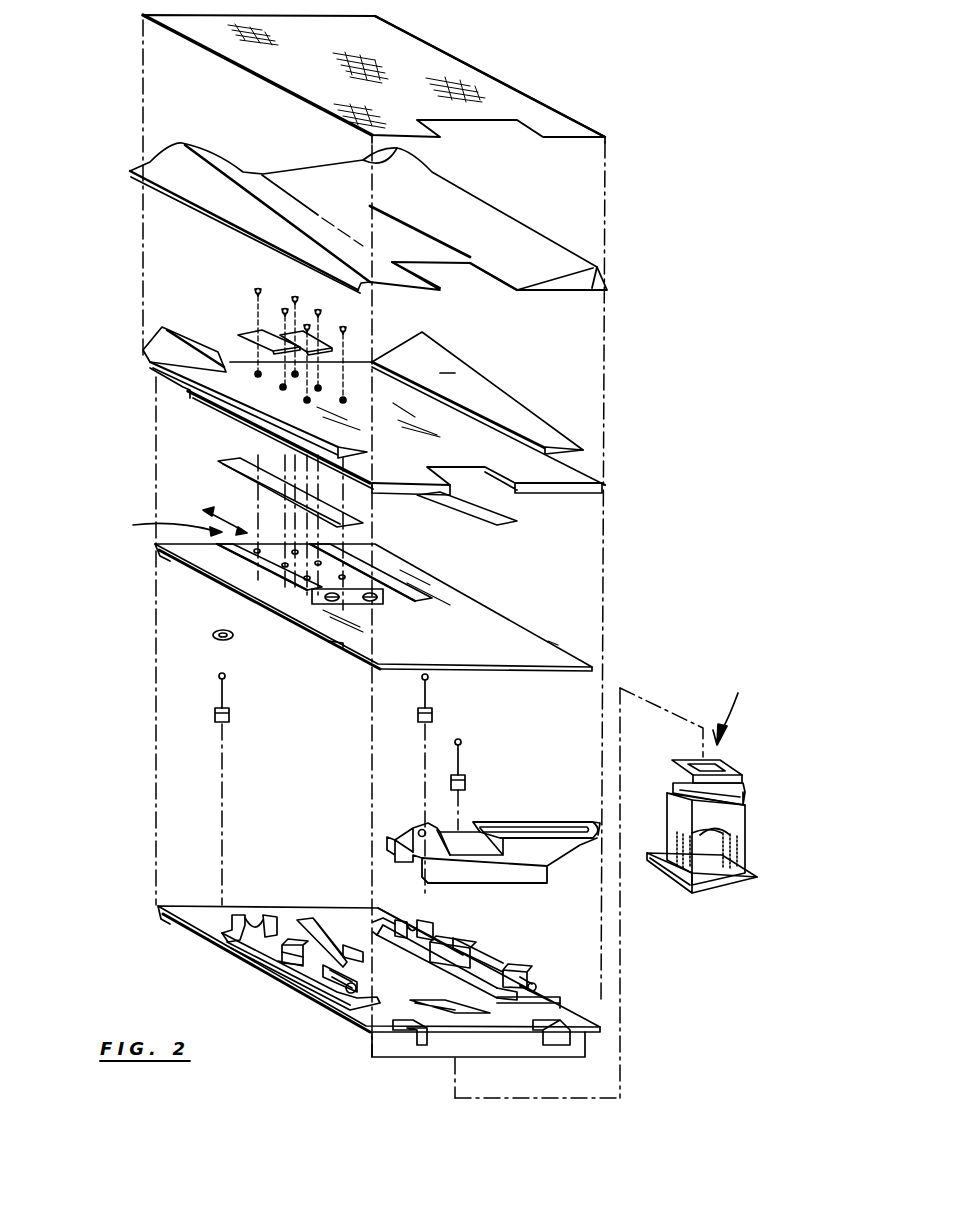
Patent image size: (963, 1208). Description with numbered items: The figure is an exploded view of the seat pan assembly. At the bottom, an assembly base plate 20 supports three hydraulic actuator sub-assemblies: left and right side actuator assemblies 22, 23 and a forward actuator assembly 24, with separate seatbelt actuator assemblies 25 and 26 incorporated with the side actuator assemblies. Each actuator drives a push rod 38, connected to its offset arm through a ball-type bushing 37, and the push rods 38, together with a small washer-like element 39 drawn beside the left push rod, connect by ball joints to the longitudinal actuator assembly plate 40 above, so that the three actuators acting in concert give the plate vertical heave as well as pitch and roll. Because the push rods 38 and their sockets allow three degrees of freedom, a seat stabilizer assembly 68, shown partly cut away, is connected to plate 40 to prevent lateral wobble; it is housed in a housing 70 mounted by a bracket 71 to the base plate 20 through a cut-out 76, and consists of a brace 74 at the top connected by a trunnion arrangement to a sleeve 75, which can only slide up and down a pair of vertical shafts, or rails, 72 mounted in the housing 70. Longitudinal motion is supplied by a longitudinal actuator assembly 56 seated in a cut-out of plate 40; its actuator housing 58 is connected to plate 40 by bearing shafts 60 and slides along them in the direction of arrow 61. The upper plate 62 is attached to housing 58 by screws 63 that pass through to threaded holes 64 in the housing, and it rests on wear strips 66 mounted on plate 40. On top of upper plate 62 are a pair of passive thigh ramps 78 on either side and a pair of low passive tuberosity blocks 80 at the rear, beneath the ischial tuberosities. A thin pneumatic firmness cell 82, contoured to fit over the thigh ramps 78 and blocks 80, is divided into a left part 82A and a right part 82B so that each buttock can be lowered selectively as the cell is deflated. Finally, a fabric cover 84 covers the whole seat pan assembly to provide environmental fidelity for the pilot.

The assembly base plate 20 is at (352, 963).
The left side actuator assembly 22 is at (407, 930).
The right side actuator assembly 23 is at (320, 935).
The forward actuator assembly 24 is at (510, 827).
The seatbelt actuator assembly 25 is at (497, 960).
The seatbelt actuator assembly 26 is at (303, 962).
The ball-type bushing 37 is at (230, 718).
The push rod 38 is at (222, 707).
The washer 39 is at (220, 672).
The longitudinal actuator assembly plate 40 is at (373, 607).
The longitudinal actuator assembly 56 is at (163, 525).
The actuator housing 58 is at (280, 567).
The bearing shafts 60 is at (372, 592).
The arrow 61 is at (233, 513).
The upper plate 62 is at (371, 402).
The screws 63 is at (293, 297).
The threaded holes 64 is at (345, 551).
The wear strips 66 is at (242, 460).
The seat stabilizer assembly 68 is at (731, 709).
The housing 70 is at (722, 830).
The bracket 71 is at (757, 867).
The vertical shafts 72 is at (722, 857).
The brace 74 is at (727, 762).
The sleeve 75 is at (742, 793).
The cut-out 76 is at (437, 1008).
The thigh ramps 78 is at (148, 340).
The tuberosity blocks 80 is at (290, 332).
The firmness cell 82 is at (390, 208).
The left part of firmness cell 82A is at (480, 217).
The right part of firmness cell 82B is at (250, 187).
The fabric cover 84 is at (443, 62).